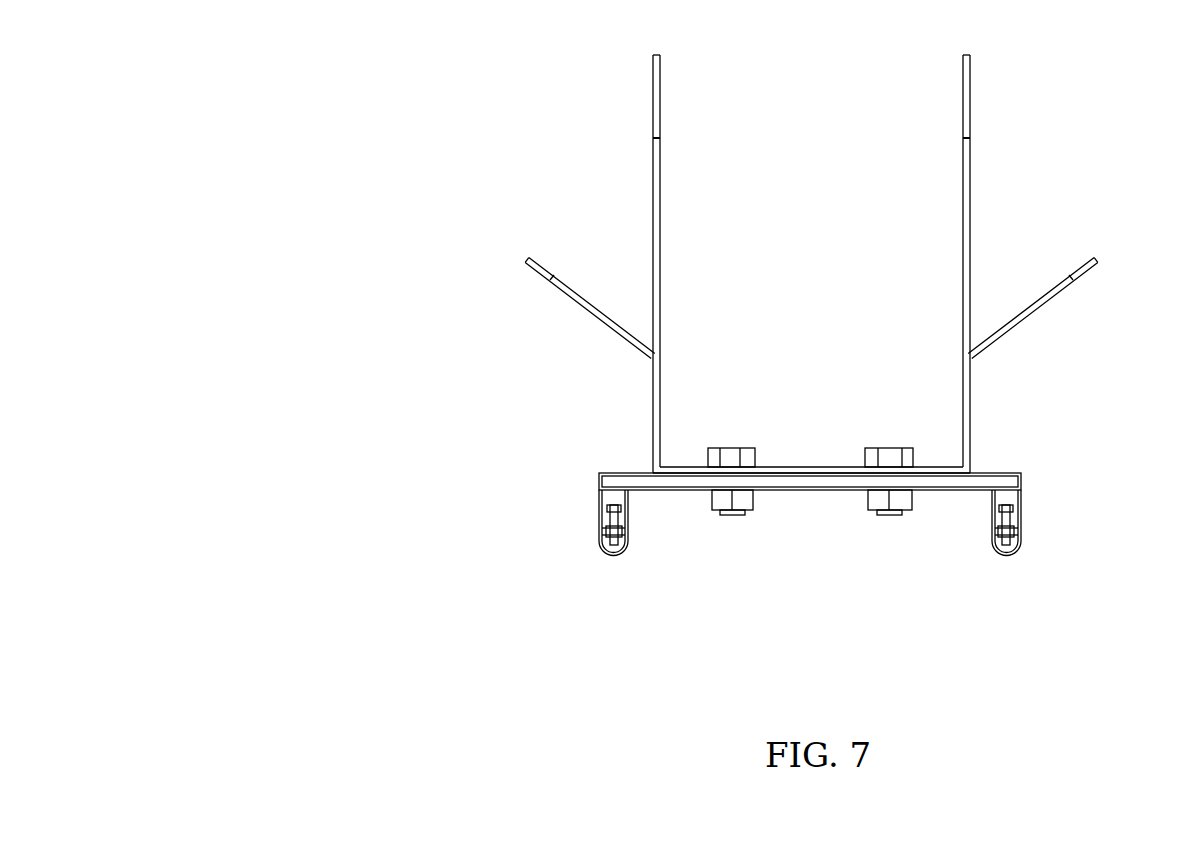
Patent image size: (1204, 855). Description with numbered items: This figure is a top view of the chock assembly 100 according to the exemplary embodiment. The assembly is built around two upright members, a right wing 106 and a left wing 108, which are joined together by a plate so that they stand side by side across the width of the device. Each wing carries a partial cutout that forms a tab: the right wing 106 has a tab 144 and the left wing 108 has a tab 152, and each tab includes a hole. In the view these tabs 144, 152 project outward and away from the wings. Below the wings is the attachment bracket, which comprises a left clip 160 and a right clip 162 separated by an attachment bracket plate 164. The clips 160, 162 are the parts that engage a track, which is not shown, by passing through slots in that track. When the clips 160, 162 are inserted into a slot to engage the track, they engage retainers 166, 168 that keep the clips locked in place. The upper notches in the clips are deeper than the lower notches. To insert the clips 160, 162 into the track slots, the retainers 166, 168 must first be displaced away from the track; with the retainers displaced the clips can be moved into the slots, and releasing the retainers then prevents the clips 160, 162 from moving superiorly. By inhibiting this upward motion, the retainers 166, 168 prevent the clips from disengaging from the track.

The chock assembly 100 is at (480, 453).
The right wing 106 is at (651, 91).
The left wing 108 is at (970, 83).
The tab 144 is at (560, 293).
The tab 152 is at (1040, 308).
The attachment bracket plate 164 is at (995, 473).
The right clip 162 is at (600, 532).
The left clip 160 is at (1021, 530).
The retainer 166 is at (612, 553).
The retainer 168 is at (1008, 553).